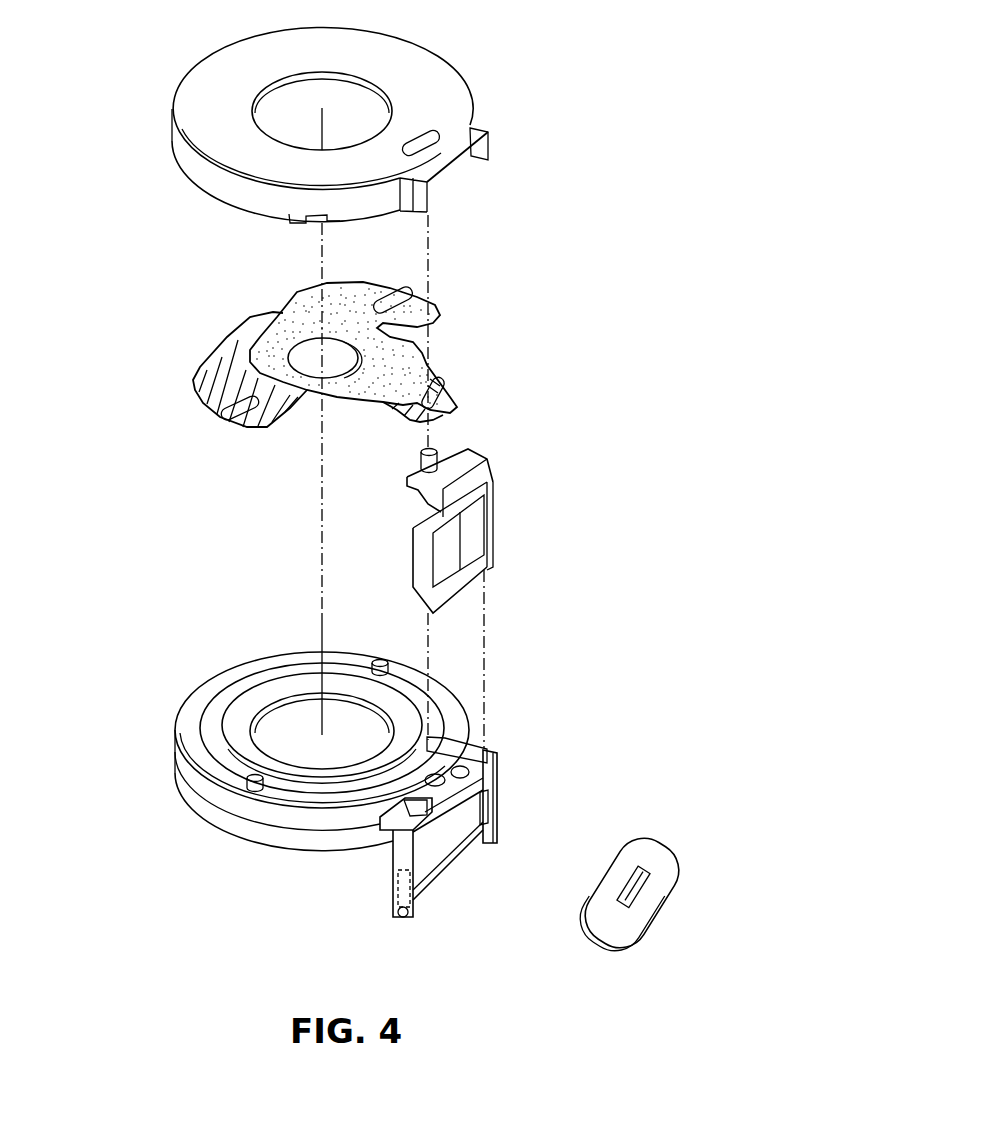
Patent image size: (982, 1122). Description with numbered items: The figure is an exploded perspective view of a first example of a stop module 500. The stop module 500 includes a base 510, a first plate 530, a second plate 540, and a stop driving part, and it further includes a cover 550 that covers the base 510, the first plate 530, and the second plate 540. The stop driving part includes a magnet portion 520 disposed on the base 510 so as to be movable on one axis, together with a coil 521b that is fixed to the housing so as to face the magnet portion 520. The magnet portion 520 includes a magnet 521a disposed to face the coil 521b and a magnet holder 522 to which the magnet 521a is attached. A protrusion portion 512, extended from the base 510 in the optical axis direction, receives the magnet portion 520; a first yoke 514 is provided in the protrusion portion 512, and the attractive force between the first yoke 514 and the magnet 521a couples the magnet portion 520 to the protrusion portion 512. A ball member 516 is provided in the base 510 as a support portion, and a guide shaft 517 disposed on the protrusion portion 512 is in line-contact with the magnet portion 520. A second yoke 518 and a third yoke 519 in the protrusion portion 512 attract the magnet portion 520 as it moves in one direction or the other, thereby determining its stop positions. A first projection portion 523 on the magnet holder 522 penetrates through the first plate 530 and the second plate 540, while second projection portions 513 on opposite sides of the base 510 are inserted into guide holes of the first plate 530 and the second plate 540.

The stop module 500 is at (537, 33).
The base 510 is at (280, 815).
The protrusion portion 512 is at (387, 850).
The second projection portion 513 is at (380, 655).
The first yoke 514 is at (430, 858).
The ball member 516 is at (497, 789).
The guide shaft 517 is at (425, 896).
The second yoke 518 is at (392, 895).
The third yoke 519 is at (488, 810).
The magnet portion 520 is at (578, 446).
The magnet 521a is at (473, 538).
The coil 521b is at (662, 848).
The magnet holder 522 is at (481, 468).
The first projection portion 523 is at (438, 450).
The first plate 530 is at (233, 372).
The second plate 540 is at (317, 301).
The cover 550 is at (222, 135).